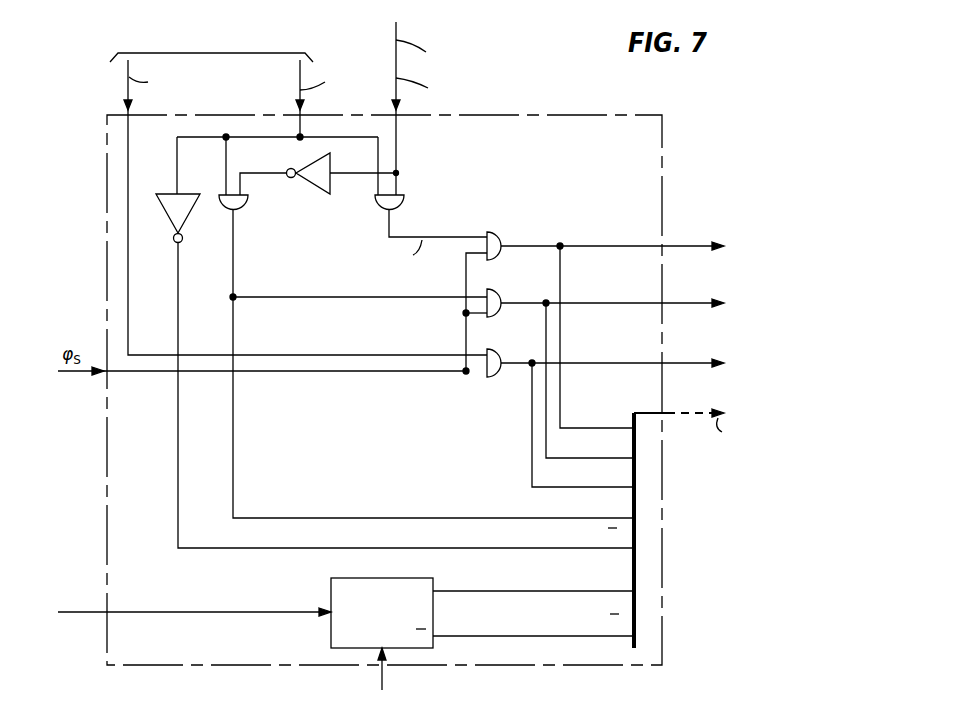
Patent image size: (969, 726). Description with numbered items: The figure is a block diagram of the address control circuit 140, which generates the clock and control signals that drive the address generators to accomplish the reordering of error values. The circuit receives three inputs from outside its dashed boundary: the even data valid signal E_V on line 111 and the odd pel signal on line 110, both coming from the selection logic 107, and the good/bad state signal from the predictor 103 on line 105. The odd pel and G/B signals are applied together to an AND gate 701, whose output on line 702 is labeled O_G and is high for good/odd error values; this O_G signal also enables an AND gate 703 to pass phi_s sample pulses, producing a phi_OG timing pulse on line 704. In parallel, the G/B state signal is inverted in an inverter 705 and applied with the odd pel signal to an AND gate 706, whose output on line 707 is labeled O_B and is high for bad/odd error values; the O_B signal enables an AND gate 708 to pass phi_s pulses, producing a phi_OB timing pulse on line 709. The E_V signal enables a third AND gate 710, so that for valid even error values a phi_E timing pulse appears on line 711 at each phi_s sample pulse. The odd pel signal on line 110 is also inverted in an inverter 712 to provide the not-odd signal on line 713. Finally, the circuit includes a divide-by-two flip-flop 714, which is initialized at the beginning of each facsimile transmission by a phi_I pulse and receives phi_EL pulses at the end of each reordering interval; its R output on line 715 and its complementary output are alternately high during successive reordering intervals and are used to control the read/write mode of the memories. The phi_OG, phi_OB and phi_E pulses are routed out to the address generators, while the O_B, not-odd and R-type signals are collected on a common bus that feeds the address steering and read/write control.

The address control circuit 140 is at (645, 113).
The selection logic 107 is at (211, 37).
The line carrying even data valid signal 111 is at (126, 65).
The line carrying odd pel signal 110 is at (300, 73).
The line carrying G/B state signal 105 is at (396, 48).
The predictor 103 is at (475, 42).
The inverter 705 is at (318, 160).
The inverter 712 is at (187, 218).
The AND gate 706 is at (240, 215).
The AND gate 701 is at (384, 212).
The line carrying O_G signal 702 is at (408, 236).
The AND gate 703 is at (492, 232).
The AND gate 708 is at (492, 290).
The AND gate 710 is at (492, 350).
The line carrying phi_OG timing pulse 704 is at (636, 244).
The line carrying phi_OB timing pulse 709 is at (636, 302).
The line carrying phi_E timing pulse 711 is at (636, 362).
The line carrying O_B signal 707 is at (455, 518).
The line carrying not-odd signal 713 is at (455, 548).
The divide-by-two flip-flop 714 is at (384, 578).
The line carrying R output 715 is at (708, 410).